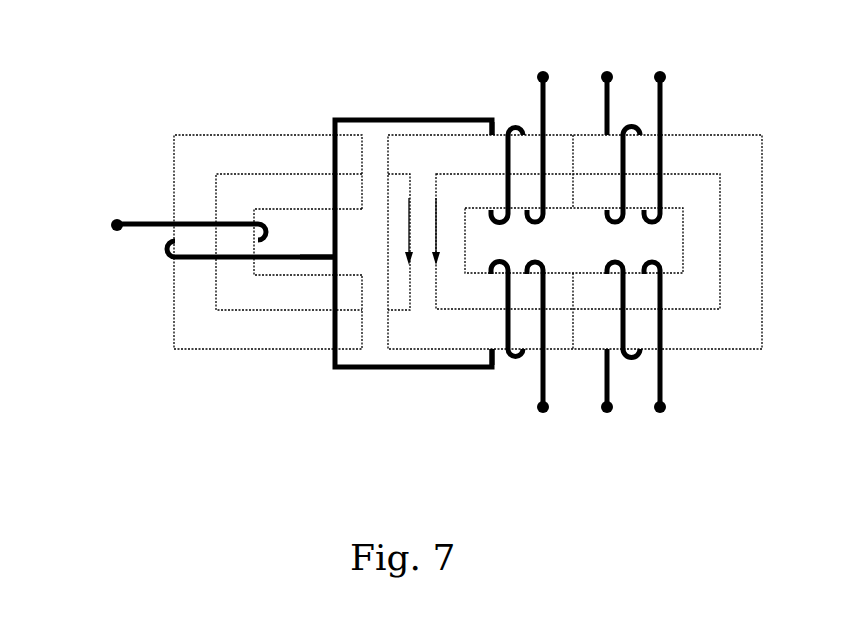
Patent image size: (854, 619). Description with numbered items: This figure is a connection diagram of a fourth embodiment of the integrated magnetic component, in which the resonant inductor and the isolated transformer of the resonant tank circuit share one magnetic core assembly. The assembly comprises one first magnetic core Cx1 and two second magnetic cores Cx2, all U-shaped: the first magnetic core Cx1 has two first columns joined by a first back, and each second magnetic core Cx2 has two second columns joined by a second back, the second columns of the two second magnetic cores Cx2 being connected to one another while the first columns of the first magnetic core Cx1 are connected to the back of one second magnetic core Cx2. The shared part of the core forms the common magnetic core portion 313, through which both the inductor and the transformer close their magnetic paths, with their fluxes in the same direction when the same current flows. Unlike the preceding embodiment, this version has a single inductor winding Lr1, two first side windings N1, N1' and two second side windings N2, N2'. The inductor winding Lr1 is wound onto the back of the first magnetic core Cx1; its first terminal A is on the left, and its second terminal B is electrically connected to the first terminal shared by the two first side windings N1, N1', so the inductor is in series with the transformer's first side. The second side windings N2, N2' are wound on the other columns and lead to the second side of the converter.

The common magnetic core portion 313 is at (386, 256).
The inductor winding Lr1 is at (183, 222).
The first magnetic core Cx1 is at (233, 392).
The second magnetic core Cx2 is at (437, 395).
The first side winding N1 is at (496, 370).
The first side winding N1' is at (507, 112).
The second side winding N2 is at (627, 370).
The second side winding N2' is at (621, 111).
The terminal A is at (115, 208).
The second terminal B is at (317, 244).